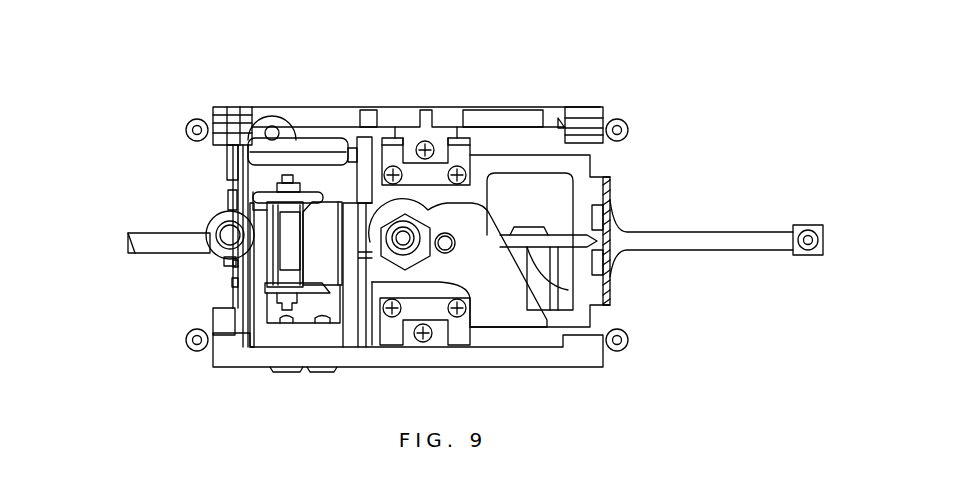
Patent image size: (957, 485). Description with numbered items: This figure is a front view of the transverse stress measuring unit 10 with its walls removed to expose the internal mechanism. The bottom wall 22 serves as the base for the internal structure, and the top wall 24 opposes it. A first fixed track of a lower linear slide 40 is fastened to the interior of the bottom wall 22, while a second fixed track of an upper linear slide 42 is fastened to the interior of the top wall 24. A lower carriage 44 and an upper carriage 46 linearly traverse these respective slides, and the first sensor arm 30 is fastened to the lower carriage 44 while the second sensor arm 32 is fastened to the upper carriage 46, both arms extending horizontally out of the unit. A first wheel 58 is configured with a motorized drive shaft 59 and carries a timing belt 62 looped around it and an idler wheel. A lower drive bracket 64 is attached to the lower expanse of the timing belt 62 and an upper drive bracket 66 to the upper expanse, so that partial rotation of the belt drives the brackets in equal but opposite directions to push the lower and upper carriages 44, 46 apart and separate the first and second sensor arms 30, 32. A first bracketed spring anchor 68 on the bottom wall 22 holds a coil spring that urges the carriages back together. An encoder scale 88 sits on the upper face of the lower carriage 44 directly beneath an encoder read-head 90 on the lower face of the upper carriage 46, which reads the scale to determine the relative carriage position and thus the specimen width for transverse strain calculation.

The transverse stress measuring unit 10 is at (177, 66).
The bottom wall 22 is at (365, 364).
The top wall 24 is at (523, 112).
The first sensor arm 30 is at (613, 253).
The second sensor arm 32 is at (703, 232).
The lower linear slide 40 is at (413, 332).
The upper linear slide 42 is at (412, 146).
The lower carriage 44 is at (592, 323).
The upper carriage 46 is at (592, 160).
The first wheel 58 is at (335, 252).
The motorized drive shaft 59 is at (133, 240).
The timing belt 62 is at (287, 250).
The lower drive bracket 64 is at (307, 296).
The upper drive bracket 66 is at (309, 194).
The first bracketed spring anchor 68 is at (527, 315).
The encoder scale 88 is at (565, 290).
The encoder read-head 90 is at (543, 217).